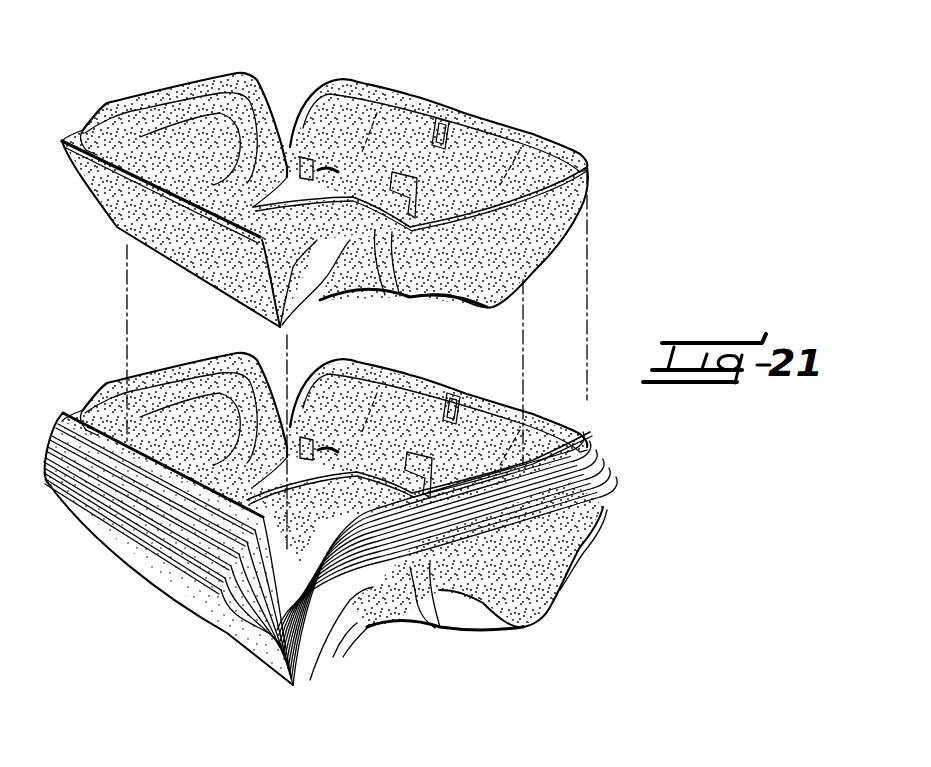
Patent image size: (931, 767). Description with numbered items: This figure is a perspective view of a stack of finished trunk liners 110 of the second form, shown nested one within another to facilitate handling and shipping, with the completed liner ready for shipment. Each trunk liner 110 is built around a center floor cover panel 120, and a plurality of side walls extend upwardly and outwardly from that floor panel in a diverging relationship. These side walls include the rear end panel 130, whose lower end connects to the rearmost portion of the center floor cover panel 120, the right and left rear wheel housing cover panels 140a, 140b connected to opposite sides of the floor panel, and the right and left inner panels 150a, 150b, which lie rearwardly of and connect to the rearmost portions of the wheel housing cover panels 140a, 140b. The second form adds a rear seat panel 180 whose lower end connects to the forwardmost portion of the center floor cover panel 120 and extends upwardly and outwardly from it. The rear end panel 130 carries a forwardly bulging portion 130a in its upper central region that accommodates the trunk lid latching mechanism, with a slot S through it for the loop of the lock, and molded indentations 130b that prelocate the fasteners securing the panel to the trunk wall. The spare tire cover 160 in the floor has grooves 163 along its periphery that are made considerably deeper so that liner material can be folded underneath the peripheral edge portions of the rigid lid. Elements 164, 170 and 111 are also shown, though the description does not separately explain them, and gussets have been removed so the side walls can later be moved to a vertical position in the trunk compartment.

The trunk liner 110 is at (533, 77).
The right rear wheel housing cover panel 140a is at (140, 138).
The right inner panel 150a is at (255, 93).
The rear end panel 130 is at (410, 102).
The forwardly bulging portion 130a is at (443, 127).
The indentations 130b is at (337, 127).
The slot S is at (440, 130).
The flap 164 is at (410, 213).
The grooves 163 is at (313, 200).
The spare tire cover 160 is at (322, 256).
The center floor cover panel 120 is at (320, 480).
The rear seat panel 180 is at (153, 233).
The side wall 111 is at (200, 253).
The left inner panel 150b is at (513, 263).
The bottom edge 170 is at (358, 290).
The left rear wheel housing cover panel 140b is at (318, 300).